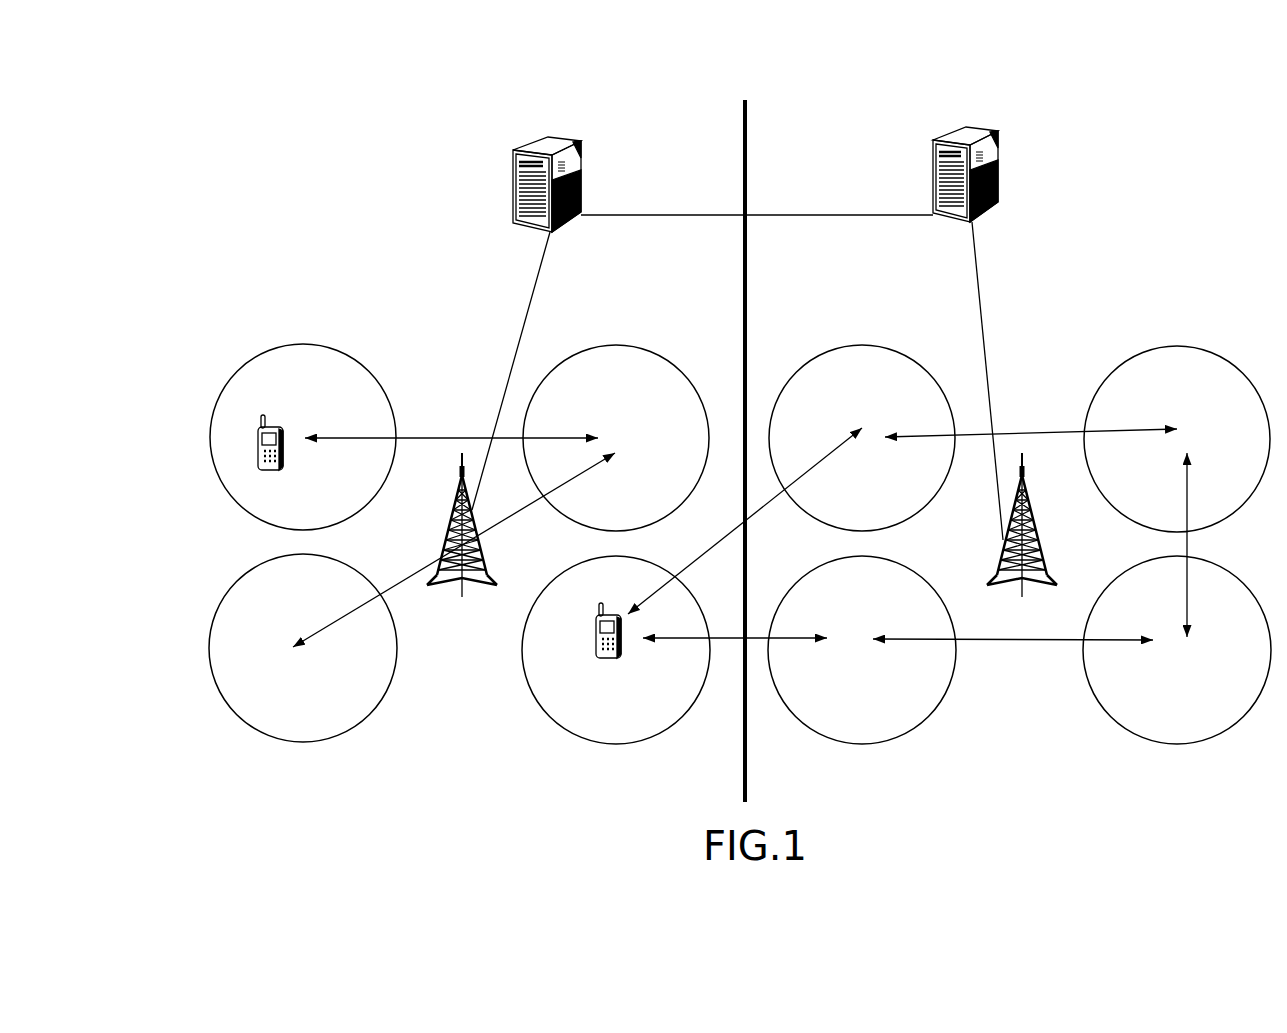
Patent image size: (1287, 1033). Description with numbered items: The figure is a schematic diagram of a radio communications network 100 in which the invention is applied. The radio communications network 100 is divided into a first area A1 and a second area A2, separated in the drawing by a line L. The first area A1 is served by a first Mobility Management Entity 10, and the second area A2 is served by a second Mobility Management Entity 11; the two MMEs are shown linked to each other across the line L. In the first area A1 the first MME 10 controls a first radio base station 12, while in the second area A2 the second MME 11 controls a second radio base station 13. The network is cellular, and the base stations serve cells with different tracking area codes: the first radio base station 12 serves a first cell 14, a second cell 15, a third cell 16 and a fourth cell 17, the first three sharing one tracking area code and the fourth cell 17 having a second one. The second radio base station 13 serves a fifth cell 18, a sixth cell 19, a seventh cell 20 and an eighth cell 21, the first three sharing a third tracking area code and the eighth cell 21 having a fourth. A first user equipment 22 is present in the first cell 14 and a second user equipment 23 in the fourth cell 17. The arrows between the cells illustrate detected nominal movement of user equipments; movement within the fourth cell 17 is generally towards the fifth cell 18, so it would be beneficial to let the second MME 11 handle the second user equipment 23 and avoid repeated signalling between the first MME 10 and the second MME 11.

The radio communications network 100 is at (723, 50).
The first Mobility Management Entity 10 is at (548, 148).
The second Mobility Management Entity 11 is at (998, 130).
The first radio base station 12 is at (445, 542).
The second radio base station 13 is at (1035, 527).
The first cell 14 is at (326, 405).
The second cell 15 is at (641, 405).
The third cell 16 is at (326, 710).
The fourth cell 17 is at (641, 710).
The fifth cell 18 is at (886, 405).
The sixth cell 19 is at (1200, 407).
The seventh cell 20 is at (886, 710).
The eighth cell 21 is at (1200, 710).
The first user equipment 22 is at (265, 470).
The second user equipment 23 is at (597, 636).
The first area A1 is at (302, 168).
The second area A2 is at (1140, 205).
The line L is at (748, 155).